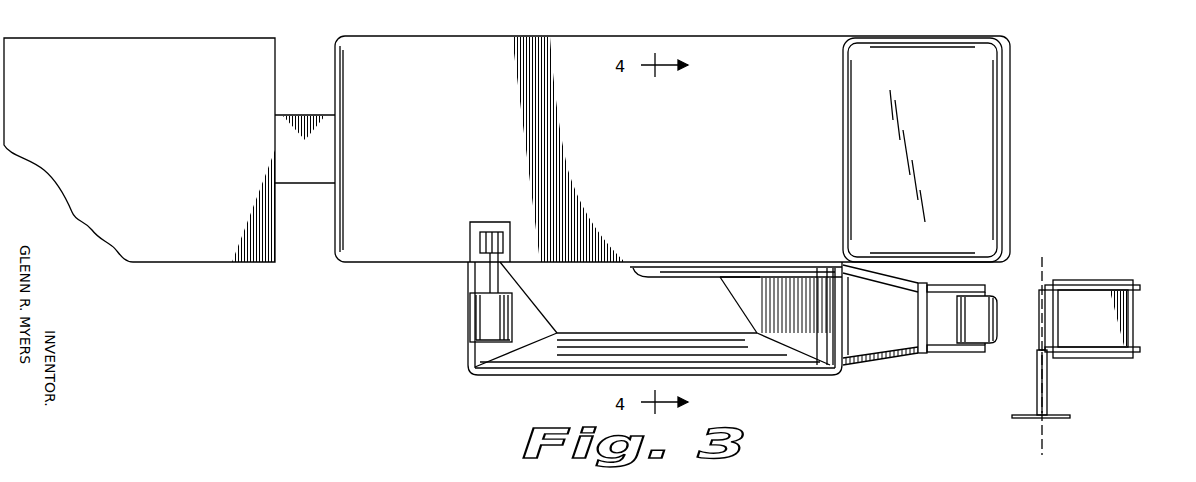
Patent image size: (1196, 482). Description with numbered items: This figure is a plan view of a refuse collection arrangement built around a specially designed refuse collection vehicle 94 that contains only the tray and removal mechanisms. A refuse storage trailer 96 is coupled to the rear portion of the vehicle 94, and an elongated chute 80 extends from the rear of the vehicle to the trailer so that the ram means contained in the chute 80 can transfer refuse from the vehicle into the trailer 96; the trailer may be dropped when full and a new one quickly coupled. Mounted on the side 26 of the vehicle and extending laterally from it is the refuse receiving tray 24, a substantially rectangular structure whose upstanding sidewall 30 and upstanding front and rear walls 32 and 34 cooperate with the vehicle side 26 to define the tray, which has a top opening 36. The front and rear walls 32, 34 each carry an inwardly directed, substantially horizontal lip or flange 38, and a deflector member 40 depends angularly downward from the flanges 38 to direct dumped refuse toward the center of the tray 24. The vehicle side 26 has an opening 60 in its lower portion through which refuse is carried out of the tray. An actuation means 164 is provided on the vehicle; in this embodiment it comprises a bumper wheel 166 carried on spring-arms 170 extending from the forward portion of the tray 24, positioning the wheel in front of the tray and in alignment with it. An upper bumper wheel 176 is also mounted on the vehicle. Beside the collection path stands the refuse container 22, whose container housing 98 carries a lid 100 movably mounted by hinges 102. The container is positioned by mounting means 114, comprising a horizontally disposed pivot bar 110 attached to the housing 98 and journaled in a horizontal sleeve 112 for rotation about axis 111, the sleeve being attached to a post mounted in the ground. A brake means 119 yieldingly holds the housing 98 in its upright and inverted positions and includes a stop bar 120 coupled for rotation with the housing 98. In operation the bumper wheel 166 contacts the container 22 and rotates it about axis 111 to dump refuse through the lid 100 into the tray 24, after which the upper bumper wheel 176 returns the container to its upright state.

The refuse container 22 is at (1097, 268).
The tray 24 is at (784, 372).
The side of the refuse collection vehicle 26 is at (387, 263).
The upstanding sidewall 30 is at (714, 372).
The upstanding front wall 32 is at (848, 342).
The upstanding rear wall 34 is at (468, 281).
The top opening 36 is at (573, 328).
The lip or flange 38 is at (829, 372).
The deflector member 40 is at (484, 350).
The opening 60 is at (600, 264).
The chute 80 is at (301, 114).
The refuse collection vehicle 94 is at (1010, 100).
The refuse storage trailer 96 is at (225, 37).
The container body or housing 98 is at (1134, 316).
The lid 100 is at (1125, 331).
The hinges 102 is at (1140, 285).
The pivot bar 110 is at (1038, 313).
The axis 111 is at (1046, 263).
The sleeve 112 is at (1048, 373).
The mounting means 114 is at (1048, 408).
The brake means 119 is at (1030, 411).
The stop bar 120 is at (1030, 420).
The actuation means 164 is at (1001, 349).
The bumper wheel 166 is at (990, 296).
The spring-arms 170 is at (900, 287).
The upper bumper wheel 176 is at (469, 324).